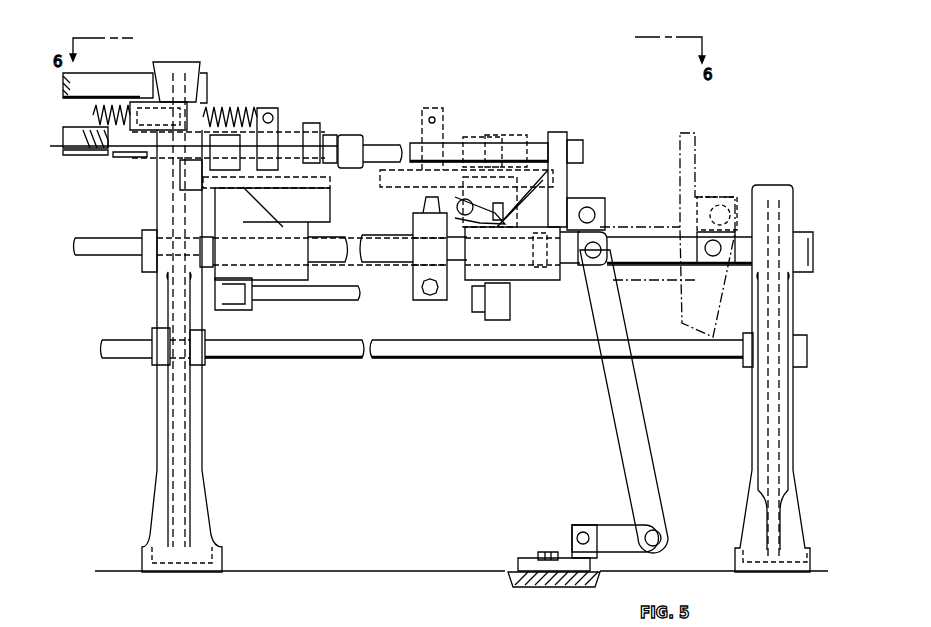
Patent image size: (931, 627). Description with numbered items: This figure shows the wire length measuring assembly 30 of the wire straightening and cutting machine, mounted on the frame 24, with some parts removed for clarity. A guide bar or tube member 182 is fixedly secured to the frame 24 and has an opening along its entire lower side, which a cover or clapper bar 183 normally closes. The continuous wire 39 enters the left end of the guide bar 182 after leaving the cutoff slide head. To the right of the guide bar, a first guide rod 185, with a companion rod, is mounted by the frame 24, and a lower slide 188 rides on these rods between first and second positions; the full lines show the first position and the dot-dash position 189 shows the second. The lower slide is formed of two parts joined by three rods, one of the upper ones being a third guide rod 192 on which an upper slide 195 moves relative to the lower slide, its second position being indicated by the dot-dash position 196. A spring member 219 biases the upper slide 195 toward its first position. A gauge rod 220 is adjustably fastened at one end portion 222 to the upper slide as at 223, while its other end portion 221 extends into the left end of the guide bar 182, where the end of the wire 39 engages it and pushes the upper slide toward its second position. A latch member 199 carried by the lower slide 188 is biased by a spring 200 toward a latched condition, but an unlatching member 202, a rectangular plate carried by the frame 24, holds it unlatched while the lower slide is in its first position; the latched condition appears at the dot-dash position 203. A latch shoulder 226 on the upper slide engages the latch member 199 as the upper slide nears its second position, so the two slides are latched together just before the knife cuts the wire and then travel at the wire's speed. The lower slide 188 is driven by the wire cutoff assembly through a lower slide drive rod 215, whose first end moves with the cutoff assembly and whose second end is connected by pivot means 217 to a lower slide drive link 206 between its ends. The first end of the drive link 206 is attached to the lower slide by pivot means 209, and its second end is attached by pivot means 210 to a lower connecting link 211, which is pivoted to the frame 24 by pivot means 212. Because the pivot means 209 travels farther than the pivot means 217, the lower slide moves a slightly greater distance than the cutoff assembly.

The frame 24 is at (157, 460).
The wire length measuring assembly 30 is at (330, 130).
The wire 39 is at (52, 148).
The guide bar or tube member 182 is at (90, 120).
The cover or clapper bar 183 is at (80, 150).
The first guide rod 185 is at (328, 265).
The lower slide 188 is at (528, 272).
The dot-dash line position of lower slide 189 is at (642, 227).
The third guide rod 192 is at (473, 143).
The upper slide 195 is at (350, 134).
The dot-dash line position of upper slide 196 is at (420, 115).
The latch member 199 is at (428, 200).
The spring 200 is at (503, 222).
The unlatching member 202 is at (414, 224).
The dot-dash latched position 203 is at (412, 216).
The lower slide drive link 206 is at (606, 386).
The pivot means 209 is at (593, 200).
The pivot means 210 is at (666, 540).
The lower connecting link 211 is at (608, 530).
The pivot means 212 is at (576, 536).
The lower slide drive rod 215 is at (108, 258).
The pivot means 217 is at (593, 262).
The spring member 219 is at (240, 108).
The gauge rod 220 is at (197, 127).
The other end portion of gauge rod 221 is at (110, 150).
The one end portion of gauge rod 222 is at (292, 135).
The fastening point on upper slide 223 is at (312, 130).
The latch shoulder 226 is at (341, 204).